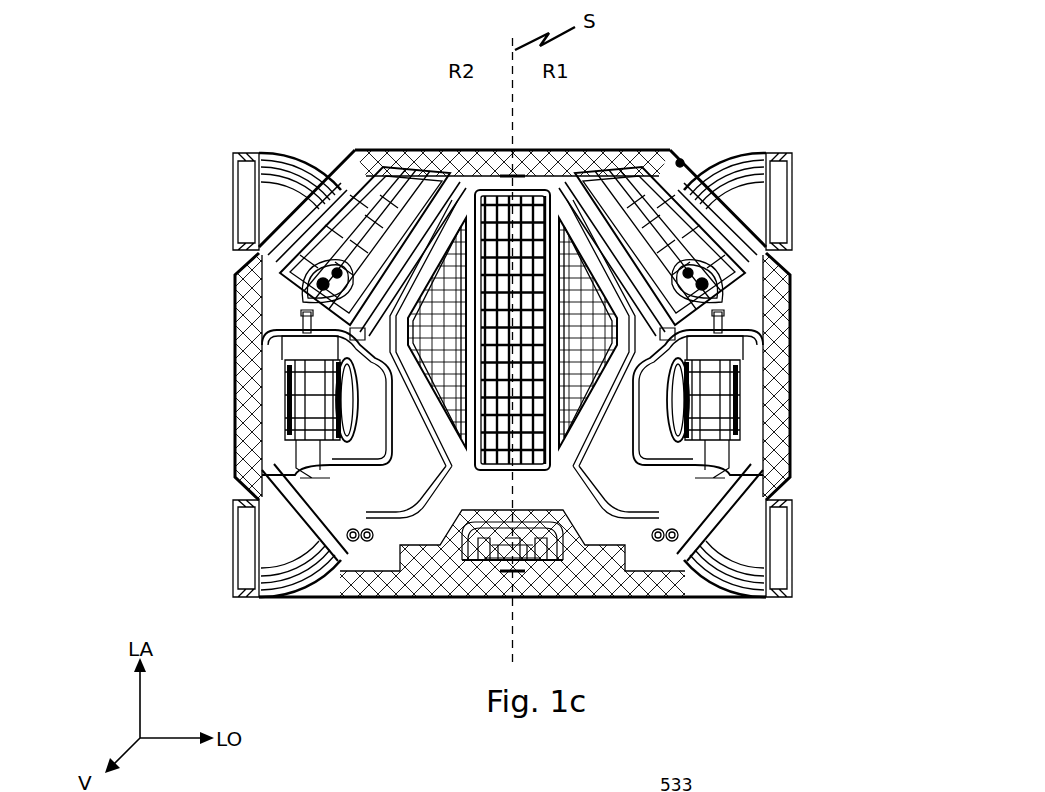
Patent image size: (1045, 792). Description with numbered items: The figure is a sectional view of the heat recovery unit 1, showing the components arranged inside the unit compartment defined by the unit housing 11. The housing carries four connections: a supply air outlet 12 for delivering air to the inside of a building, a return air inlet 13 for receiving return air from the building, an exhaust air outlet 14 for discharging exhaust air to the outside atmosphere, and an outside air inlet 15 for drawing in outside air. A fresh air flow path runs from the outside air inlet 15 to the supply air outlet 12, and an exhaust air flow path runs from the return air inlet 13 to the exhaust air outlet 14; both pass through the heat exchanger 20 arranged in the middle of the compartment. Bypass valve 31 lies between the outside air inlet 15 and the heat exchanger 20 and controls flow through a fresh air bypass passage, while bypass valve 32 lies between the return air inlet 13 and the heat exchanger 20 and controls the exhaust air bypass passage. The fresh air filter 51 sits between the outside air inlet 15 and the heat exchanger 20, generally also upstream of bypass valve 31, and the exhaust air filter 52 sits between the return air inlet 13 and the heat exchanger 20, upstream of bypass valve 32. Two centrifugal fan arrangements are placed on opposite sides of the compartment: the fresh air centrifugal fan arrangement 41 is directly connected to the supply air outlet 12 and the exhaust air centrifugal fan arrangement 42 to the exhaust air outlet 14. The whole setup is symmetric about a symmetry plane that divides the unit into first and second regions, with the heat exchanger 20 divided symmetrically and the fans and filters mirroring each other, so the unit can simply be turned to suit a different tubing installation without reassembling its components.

The heat recovery unit 1 is at (126, 300).
The unit housing 11 is at (790, 292).
The supply air outlet 12 is at (793, 550).
The return air inlet 13 is at (792, 196).
The exhaust air outlet 14 is at (233, 540).
The outside air inlet 15 is at (235, 190).
The heat exchanger 20 is at (541, 195).
The bypass valve 31 is at (433, 147).
The bypass valve 32 is at (600, 162).
The fresh air centrifugal fan arrangement 41 is at (727, 403).
The exhaust air centrifugal fan arrangement 42 is at (317, 402).
The fresh air filter 51 is at (285, 287).
The exhaust air filter 52 is at (680, 163).